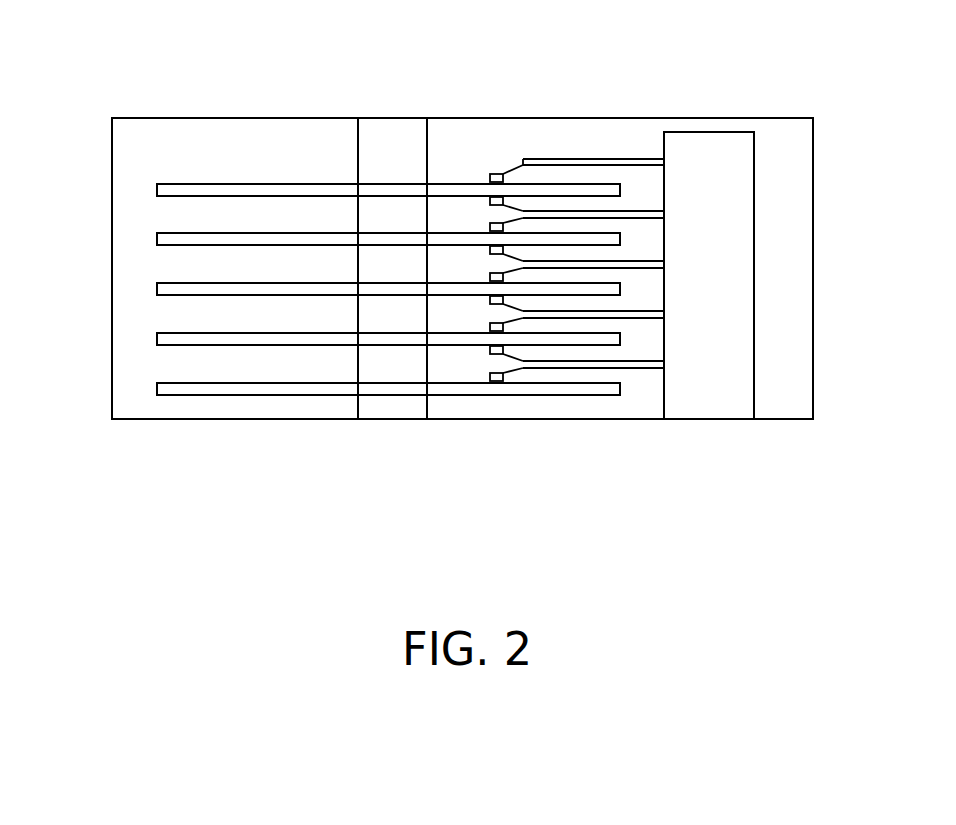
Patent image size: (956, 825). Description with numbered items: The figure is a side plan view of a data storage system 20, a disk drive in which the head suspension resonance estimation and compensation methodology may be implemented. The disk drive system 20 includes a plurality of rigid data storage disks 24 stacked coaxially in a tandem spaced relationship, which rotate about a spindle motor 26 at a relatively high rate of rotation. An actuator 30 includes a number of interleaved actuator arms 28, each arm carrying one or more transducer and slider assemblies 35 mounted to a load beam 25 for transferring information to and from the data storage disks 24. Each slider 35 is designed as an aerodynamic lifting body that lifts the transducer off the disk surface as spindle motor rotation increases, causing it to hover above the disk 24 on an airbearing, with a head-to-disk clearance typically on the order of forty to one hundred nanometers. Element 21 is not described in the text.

The data storage system 20 is at (714, 90).
The substrate 21 is at (814, 305).
The rigid data storage disks 24 is at (157, 188).
The load beam 25 is at (508, 170).
The spindle motor 26 is at (385, 412).
The actuator arms 28 is at (573, 159).
The actuator 30 is at (709, 392).
The slider assemblies 35 is at (492, 174).